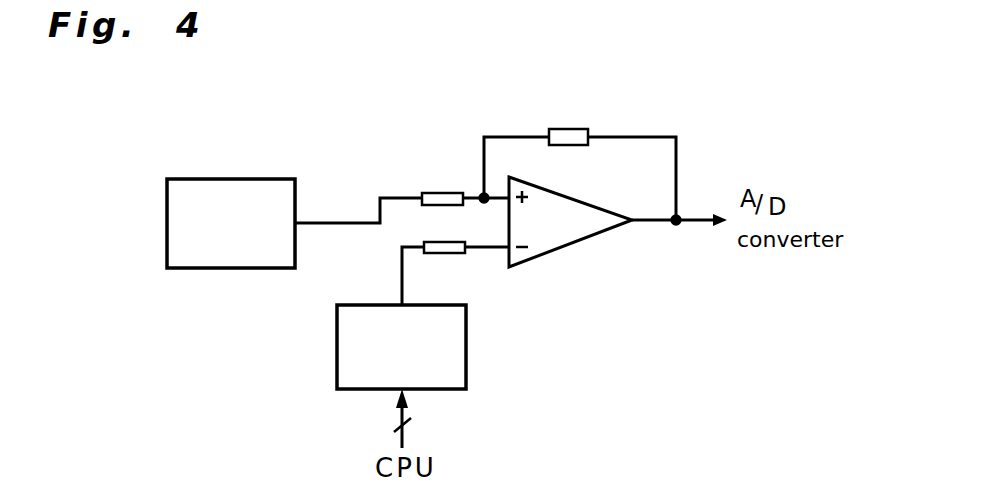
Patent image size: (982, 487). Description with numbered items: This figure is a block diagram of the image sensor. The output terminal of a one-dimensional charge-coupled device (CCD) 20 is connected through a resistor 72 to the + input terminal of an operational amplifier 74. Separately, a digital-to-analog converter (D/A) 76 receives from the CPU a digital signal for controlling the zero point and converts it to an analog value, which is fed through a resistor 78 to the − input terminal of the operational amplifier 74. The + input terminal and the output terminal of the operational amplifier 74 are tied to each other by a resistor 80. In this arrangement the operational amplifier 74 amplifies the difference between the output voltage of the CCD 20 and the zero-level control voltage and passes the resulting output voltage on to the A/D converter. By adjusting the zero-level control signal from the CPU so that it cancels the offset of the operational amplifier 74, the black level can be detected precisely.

The one-dimensional charge-coupled device 20 is at (263, 178).
The resistor 72 is at (447, 192).
The operational amplifier 74 is at (581, 200).
The digital-to-analog converter 76 is at (466, 347).
The resistor 78 is at (445, 253).
The resistor 80 is at (570, 129).